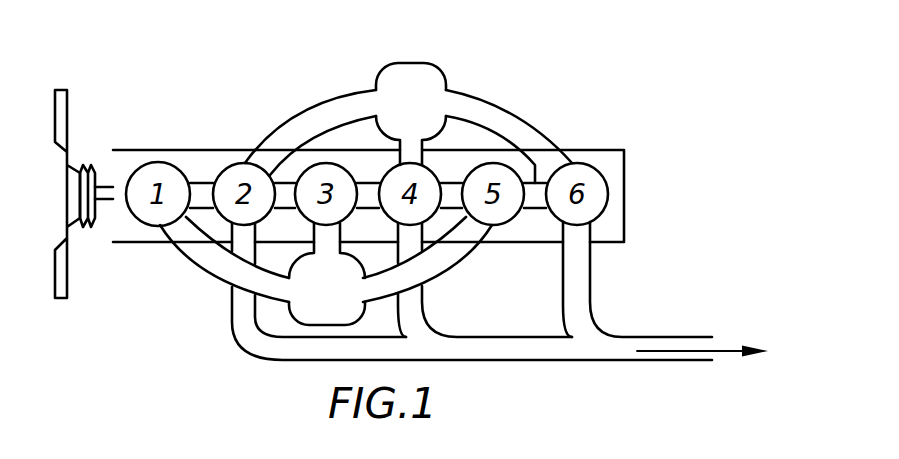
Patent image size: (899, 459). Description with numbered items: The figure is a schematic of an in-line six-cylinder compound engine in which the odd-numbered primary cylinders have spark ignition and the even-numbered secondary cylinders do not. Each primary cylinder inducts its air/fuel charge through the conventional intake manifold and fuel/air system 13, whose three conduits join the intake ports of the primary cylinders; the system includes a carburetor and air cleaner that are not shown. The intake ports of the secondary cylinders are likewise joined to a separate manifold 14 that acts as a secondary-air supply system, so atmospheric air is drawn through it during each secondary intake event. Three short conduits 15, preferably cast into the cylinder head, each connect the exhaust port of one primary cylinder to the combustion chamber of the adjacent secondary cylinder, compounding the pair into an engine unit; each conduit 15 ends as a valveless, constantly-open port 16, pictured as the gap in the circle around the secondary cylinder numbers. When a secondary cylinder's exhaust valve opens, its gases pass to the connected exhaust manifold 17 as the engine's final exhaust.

The intake manifold and fuel/air system 13 is at (312, 308).
The secondary-air supply manifold 14 is at (422, 80).
The short conduit 15 is at (202, 183).
The valveless port 16 is at (215, 196).
The exhaust manifold 17 is at (490, 348).